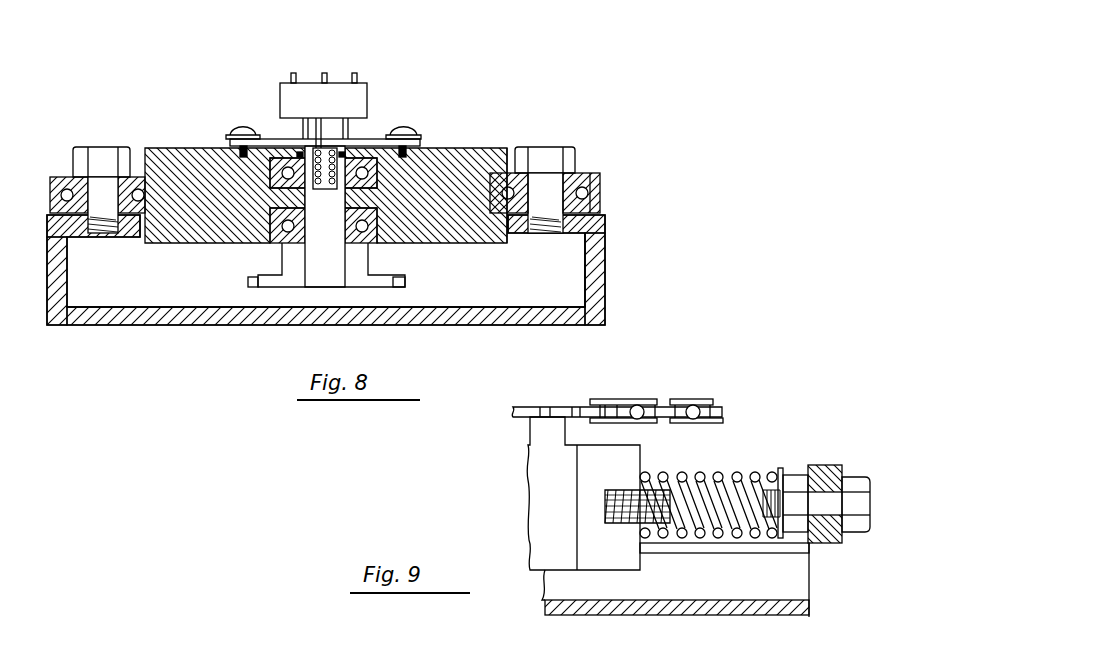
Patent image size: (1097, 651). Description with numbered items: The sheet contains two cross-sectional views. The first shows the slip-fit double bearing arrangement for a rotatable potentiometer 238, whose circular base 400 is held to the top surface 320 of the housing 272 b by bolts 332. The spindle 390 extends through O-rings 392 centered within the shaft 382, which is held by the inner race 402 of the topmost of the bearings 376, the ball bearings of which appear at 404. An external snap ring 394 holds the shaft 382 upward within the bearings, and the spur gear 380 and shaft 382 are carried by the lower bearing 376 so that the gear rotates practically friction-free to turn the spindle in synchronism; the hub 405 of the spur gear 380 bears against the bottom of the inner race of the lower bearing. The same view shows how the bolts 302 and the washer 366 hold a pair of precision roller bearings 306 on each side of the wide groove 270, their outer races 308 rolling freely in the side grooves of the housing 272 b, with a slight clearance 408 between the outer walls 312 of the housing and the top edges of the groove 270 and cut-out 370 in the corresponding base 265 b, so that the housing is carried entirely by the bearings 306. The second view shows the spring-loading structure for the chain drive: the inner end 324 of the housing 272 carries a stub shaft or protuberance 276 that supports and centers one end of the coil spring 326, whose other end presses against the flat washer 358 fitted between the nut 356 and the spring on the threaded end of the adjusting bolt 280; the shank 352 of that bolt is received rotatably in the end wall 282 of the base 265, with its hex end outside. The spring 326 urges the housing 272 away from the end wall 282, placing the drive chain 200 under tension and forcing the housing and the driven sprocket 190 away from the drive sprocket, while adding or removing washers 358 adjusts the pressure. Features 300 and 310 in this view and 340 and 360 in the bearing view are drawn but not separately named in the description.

In FIG. 9, the driven sprocket 190 is at (553, 407).
In FIG. 9, the drive chain 200 is at (683, 399).
In FIG. 8, the potentiometer 238 is at (367, 96).
In FIG. 9, the base 265 is at (811, 617).
In FIG. 8, the base housing 265 b is at (605, 280).
In FIG. 8, the wide groove 270 is at (140, 306).
In FIG. 9, the housing 272 is at (640, 568).
In FIG. 8, the housing 272 b is at (497, 147).
In FIG. 9, the stub shaft 276 is at (670, 512).
In FIG. 9, the adjusting bolt 280 is at (870, 500).
In FIG. 9, the end wall 282 is at (835, 465).
In FIG. 9, the vertical rib 300 is at (780, 600).
In FIG. 8, the bolts 302 is at (105, 147).
In FIG. 8, the precision roller bearings 306 is at (50, 180).
In FIG. 8, the outer races 308 is at (600, 186).
In FIG. 9, the threaded rod 310 is at (622, 490).
In FIG. 8, the outer walls 312 is at (128, 147).
In FIG. 8, the top surface 320 is at (160, 147).
In FIG. 9, the inner end 324 is at (640, 458).
In FIG. 9, the coil spring 326 is at (757, 543).
In FIG. 8, the bolts 332 is at (236, 130).
In FIG. 8, the terminal pin 340 is at (358, 75).
In FIG. 9, the shank 352 is at (847, 477).
In FIG. 9, the nut 356 is at (797, 475).
In FIG. 9, the flat washer 358 is at (780, 468).
In FIG. 8, the threaded hole 360 is at (548, 234).
In FIG. 8, the washer 366 is at (596, 173).
In FIG. 8, the cut-out 370 is at (585, 287).
In FIG. 8, the bearings 376 is at (378, 232).
In FIG. 8, the spur gear 380 is at (405, 281).
In FIG. 8, the shaft 382 is at (366, 268).
In FIG. 8, the spindle 390 is at (322, 216).
In FIG. 8, the O-rings 392 is at (290, 157).
In FIG. 8, the external snap ring 394 is at (318, 155).
In FIG. 8, the circular base 400 is at (275, 160).
In FIG. 8, the inner race 402 is at (300, 157).
In FIG. 8, the ball bearings 404 is at (270, 180).
In FIG. 8, the hub 405 is at (282, 257).
In FIG. 8, the slight clearance 408 is at (147, 243).